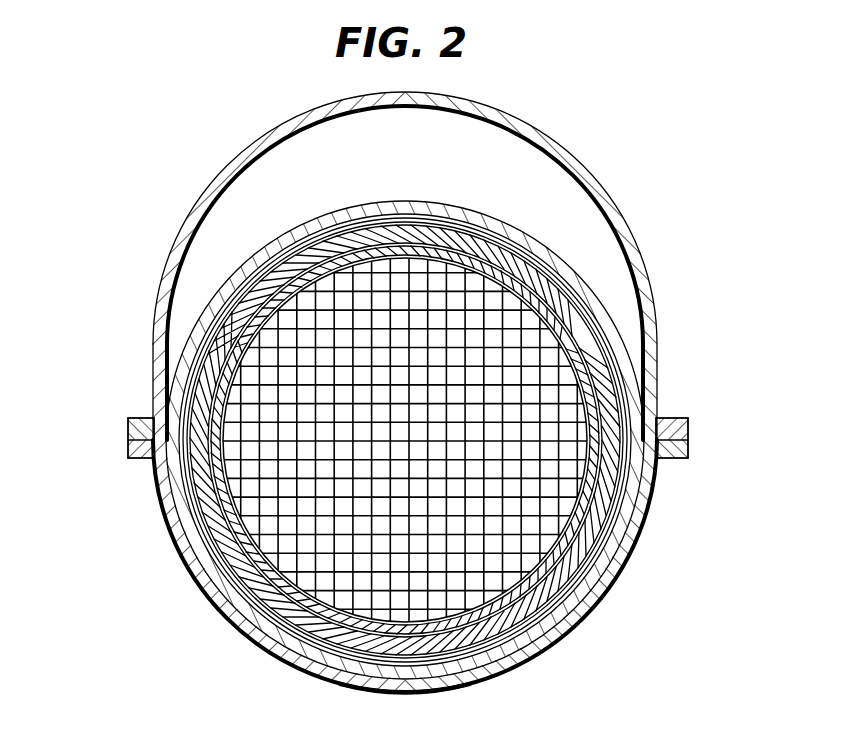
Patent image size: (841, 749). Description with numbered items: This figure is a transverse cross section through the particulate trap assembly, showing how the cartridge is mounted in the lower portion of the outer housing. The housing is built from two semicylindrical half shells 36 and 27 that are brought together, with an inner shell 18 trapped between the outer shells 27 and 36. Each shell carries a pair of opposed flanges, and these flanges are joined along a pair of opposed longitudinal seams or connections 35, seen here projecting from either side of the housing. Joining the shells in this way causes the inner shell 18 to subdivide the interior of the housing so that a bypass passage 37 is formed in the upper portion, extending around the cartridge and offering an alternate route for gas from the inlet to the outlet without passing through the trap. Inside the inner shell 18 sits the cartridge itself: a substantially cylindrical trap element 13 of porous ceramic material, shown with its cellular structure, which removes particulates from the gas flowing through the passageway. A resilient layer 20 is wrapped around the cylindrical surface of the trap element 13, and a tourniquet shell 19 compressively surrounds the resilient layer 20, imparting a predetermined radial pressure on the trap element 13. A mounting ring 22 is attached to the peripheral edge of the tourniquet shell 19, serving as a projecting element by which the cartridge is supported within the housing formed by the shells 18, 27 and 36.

The trap element 13 is at (307, 563).
The inner shell 18 is at (618, 333).
The tourniquet shell 19 is at (592, 542).
The resilient layer 20 is at (237, 537).
The mounting ring 22 is at (567, 592).
The outer shell 27 is at (384, 691).
The longitudinal seams 35 is at (128, 431).
The outer shell 36 is at (573, 157).
The bypass passage 37 is at (604, 240).